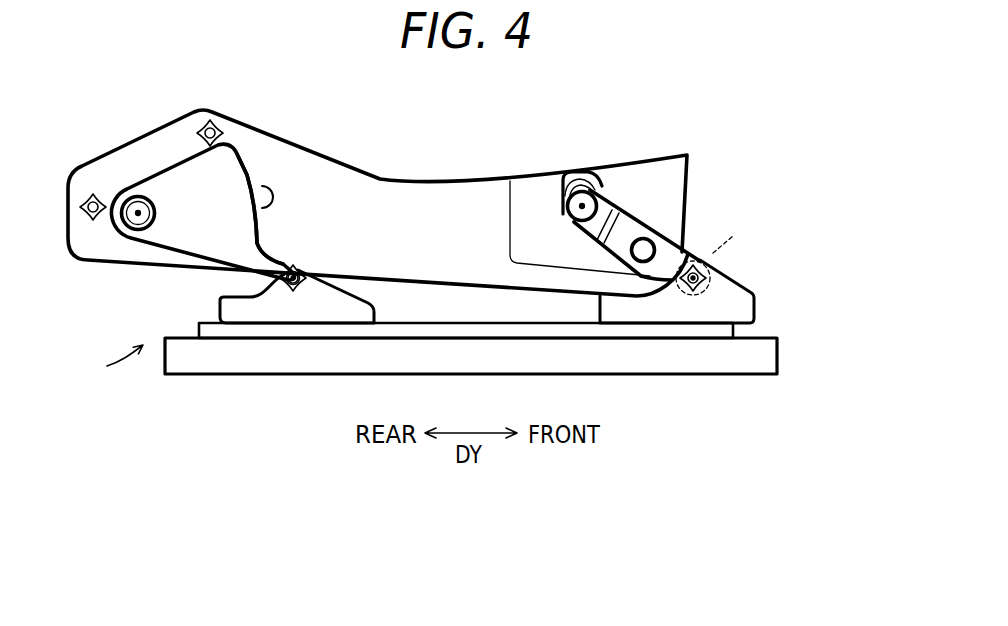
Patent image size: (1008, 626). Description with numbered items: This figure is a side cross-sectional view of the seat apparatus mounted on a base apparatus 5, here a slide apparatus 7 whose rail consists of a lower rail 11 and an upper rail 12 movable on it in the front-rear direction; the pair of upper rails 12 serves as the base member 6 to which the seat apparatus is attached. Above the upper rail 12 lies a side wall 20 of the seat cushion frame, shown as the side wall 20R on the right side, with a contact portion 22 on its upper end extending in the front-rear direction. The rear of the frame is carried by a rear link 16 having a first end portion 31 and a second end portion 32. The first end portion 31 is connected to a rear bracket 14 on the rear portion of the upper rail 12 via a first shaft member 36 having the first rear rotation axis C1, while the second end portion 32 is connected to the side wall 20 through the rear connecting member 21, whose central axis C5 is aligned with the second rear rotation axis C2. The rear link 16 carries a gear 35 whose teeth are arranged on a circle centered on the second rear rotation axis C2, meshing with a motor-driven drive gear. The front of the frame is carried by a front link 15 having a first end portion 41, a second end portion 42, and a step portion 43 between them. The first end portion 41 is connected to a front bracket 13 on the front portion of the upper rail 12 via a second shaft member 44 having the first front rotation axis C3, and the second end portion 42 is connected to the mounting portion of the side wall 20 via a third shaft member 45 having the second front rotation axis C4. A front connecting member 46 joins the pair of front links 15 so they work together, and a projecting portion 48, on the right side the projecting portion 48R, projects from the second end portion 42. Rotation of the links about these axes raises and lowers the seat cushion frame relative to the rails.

The base apparatus 5 is at (98, 363).
The slide apparatus 7 is at (125, 355).
The lower rail 11 is at (777, 357).
The upper rail 12 is at (533, 338).
The base member 6 is at (733, 330).
The front bracket 13 is at (754, 312).
The rear bracket 14 is at (375, 305).
The front link 15 is at (668, 237).
The rear link 16 is at (258, 247).
The side wall 20 is at (378, 203).
The side wall on the right side 20R is at (371, 196).
The rear connecting member 21 is at (140, 194).
The contact portion 22 is at (563, 174).
The first end portion 31 is at (303, 267).
The second end portion 32 is at (117, 228).
The gear 35 is at (247, 164).
The first shaft member 36 is at (300, 273).
The first end portion 41 is at (730, 230).
The second end portion 42 is at (563, 212).
The step portion 43 is at (592, 242).
The second shaft member 44 is at (705, 274).
The third shaft member 45 is at (566, 200).
The front connecting member 46 is at (645, 238).
The projecting portion 48 is at (613, 152).
The projecting portion on the right side 48R is at (594, 178).
The first rear rotation axis C1 is at (288, 282).
The second rear rotation axis C2 is at (194, 213).
The central axis C5 is at (157, 213).
The first front rotation axis C3 is at (697, 279).
The second front rotation axis C4 is at (598, 205).